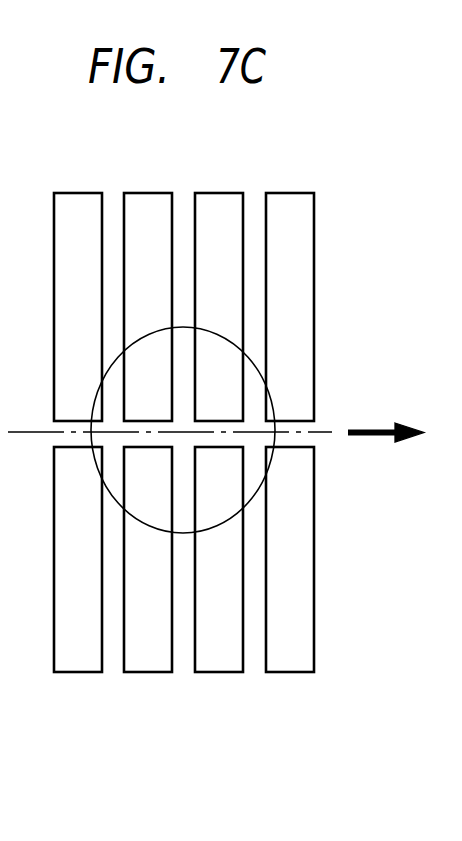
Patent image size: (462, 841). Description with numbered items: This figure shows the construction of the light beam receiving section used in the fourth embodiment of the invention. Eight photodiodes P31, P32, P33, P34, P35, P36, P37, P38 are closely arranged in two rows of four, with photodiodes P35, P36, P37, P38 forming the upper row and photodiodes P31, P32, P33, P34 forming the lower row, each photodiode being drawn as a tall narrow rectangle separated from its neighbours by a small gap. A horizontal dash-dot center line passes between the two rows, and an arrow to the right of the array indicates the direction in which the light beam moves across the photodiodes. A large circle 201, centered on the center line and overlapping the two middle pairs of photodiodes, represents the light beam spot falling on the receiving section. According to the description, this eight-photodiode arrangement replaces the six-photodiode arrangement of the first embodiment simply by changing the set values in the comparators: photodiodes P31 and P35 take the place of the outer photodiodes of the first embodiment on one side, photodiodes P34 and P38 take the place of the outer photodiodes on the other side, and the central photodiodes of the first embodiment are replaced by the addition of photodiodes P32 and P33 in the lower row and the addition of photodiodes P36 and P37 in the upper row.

The photodiode P31 is at (87, 672).
The photodiode P32 is at (165, 672).
The photodiode P33 is at (233, 672).
The photodiode P34 is at (297, 672).
The photodiode P35 is at (82, 193).
The photodiode P36 is at (157, 193).
The photodiode P37 is at (227, 193).
The photodiode P38 is at (295, 193).
The light beam spot 201 is at (265, 371).